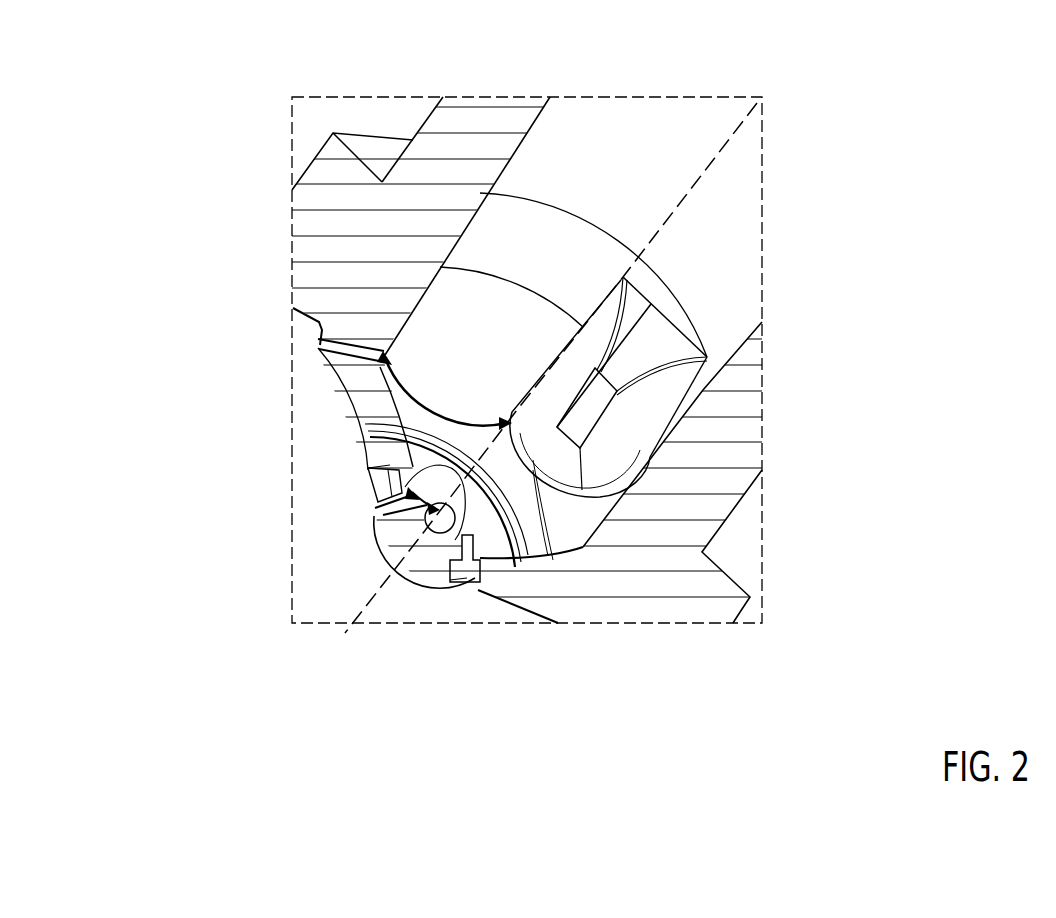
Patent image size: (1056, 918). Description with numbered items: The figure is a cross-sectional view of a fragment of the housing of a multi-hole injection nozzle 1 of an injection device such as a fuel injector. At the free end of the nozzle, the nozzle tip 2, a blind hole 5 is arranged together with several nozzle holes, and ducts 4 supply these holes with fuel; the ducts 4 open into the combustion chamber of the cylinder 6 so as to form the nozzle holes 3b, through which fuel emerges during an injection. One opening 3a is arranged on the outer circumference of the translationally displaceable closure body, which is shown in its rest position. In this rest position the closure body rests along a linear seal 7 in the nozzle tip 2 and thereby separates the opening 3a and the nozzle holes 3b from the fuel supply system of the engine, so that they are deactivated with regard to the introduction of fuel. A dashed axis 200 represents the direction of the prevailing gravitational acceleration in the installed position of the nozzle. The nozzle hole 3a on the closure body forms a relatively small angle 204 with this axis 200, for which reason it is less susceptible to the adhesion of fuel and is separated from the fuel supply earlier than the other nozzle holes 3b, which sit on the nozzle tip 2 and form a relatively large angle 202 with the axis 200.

The injection nozzle 1 is at (190, 122).
The nozzle tip 2 is at (387, 687).
The opening 3a is at (293, 337).
The nozzle hole 3b is at (385, 490).
The duct 4 is at (345, 335).
The blind hole 5 is at (425, 518).
The cylinder 6 is at (327, 572).
The linear seal 7 is at (545, 520).
The axis 200 is at (693, 188).
The angle 202 is at (403, 395).
The angle 204 is at (423, 512).